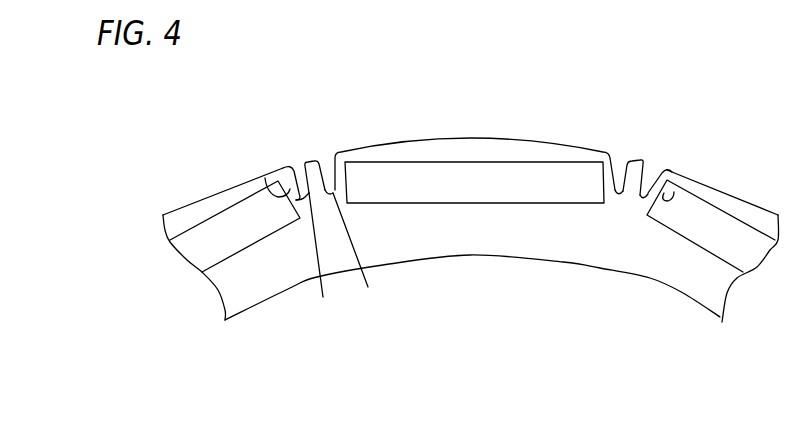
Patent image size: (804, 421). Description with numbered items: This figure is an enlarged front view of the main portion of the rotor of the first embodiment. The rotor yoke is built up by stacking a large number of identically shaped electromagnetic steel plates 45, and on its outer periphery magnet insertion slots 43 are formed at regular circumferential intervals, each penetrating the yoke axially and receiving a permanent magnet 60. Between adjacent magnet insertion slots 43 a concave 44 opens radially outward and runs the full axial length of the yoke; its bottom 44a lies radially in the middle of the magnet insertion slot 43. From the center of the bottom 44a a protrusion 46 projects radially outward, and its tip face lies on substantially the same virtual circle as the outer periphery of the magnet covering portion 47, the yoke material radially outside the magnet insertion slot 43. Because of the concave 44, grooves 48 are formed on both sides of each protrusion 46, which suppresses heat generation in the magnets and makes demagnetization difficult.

The magnet insertion slot 43 is at (265, 178).
The concave 44 is at (293, 168).
The bottom of the concave 44a is at (652, 176).
The electromagnetic steel plate 45 is at (472, 256).
The protrusion 46 is at (308, 161).
The magnet covering portion 47 is at (475, 148).
The groove 48 is at (323, 297).
The permanent magnet 60 is at (224, 232).